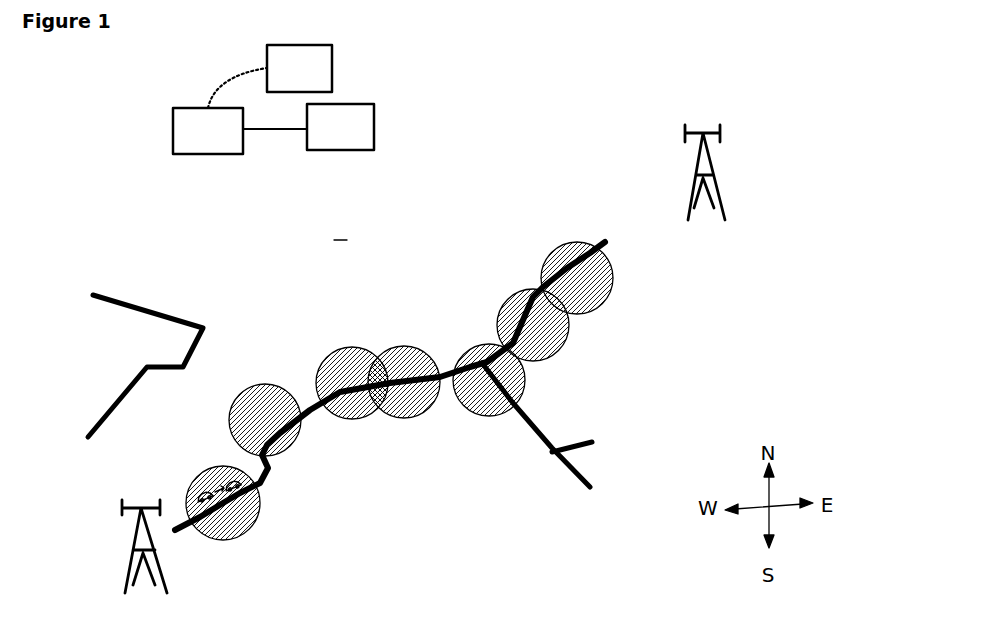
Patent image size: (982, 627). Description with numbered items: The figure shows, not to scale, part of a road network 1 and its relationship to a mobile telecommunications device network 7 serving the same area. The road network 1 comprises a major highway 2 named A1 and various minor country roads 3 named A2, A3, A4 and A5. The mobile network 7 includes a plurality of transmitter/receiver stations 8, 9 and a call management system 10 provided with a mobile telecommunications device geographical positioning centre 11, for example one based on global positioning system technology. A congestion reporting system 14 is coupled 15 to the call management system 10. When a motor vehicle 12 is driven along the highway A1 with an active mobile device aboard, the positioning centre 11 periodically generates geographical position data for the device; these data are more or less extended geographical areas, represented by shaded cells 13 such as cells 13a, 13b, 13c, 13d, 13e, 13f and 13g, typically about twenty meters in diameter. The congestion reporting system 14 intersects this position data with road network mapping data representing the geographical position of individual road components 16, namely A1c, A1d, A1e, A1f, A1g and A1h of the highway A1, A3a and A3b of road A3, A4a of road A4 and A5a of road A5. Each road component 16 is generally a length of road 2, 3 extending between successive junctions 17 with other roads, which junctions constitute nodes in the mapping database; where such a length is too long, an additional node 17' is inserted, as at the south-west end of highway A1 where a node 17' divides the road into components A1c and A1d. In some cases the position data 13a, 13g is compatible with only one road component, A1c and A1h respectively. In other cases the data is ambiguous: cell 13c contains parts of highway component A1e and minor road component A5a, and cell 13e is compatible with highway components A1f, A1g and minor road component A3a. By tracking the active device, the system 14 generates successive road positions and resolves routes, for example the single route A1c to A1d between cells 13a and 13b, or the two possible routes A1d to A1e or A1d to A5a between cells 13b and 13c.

The road network 1 is at (313, 415).
The major highway 2 is at (390, 426).
The minor country roads 3 is at (373, 390).
The mobile telecommunications device network 7 is at (340, 230).
The transmitter/receiver station 8 is at (728, 203).
The transmitter/receiver station 9 is at (123, 565).
The call management system 10 is at (217, 153).
The mobile telecommunications device geographical positioning centre (MPC) 11 is at (345, 150).
The motor vehicle 12 is at (196, 482).
The shaded cells 13 is at (590, 300).
The geographical position data 13a is at (235, 533).
The geographical position data 13b is at (300, 443).
The geographical position data 13c is at (362, 422).
The geographical position data 13d is at (427, 437).
The geographical position data 13e is at (527, 382).
The geographical position data 13f is at (563, 343).
The geographical position data 13g is at (613, 292).
The congestion reporting system (CRS) 14 is at (338, 62).
The coupling 15 is at (210, 92).
The road components 16 is at (228, 535).
The junctions 17 is at (407, 378).
The additional node 17' is at (393, 316).
The major highway A1 is at (246, 492).
The road component A1c is at (271, 516).
The road component A1d is at (289, 420).
The road component A1e is at (356, 376).
The road component A1f is at (427, 390).
The road component A1g is at (525, 340).
The road component A1h is at (613, 292).
The minor country road A2 is at (145, 366).
The minor country road A3 is at (570, 440).
The road component A3a is at (523, 410).
The road component A3b is at (577, 478).
The minor country road A4 is at (605, 452).
The road component A4a is at (580, 450).
The minor country road A5 is at (428, 412).
The road component A5a is at (413, 415).